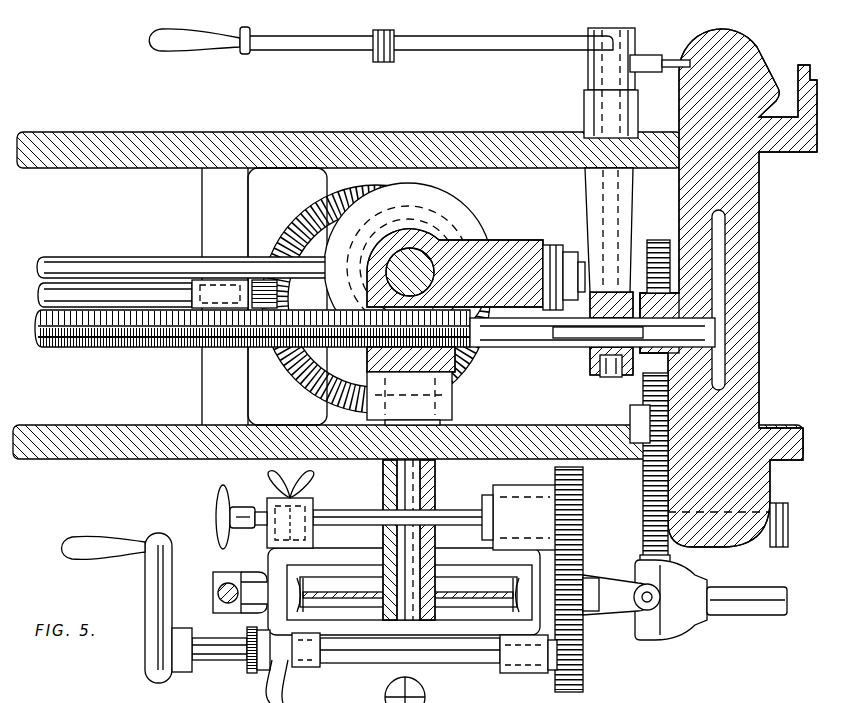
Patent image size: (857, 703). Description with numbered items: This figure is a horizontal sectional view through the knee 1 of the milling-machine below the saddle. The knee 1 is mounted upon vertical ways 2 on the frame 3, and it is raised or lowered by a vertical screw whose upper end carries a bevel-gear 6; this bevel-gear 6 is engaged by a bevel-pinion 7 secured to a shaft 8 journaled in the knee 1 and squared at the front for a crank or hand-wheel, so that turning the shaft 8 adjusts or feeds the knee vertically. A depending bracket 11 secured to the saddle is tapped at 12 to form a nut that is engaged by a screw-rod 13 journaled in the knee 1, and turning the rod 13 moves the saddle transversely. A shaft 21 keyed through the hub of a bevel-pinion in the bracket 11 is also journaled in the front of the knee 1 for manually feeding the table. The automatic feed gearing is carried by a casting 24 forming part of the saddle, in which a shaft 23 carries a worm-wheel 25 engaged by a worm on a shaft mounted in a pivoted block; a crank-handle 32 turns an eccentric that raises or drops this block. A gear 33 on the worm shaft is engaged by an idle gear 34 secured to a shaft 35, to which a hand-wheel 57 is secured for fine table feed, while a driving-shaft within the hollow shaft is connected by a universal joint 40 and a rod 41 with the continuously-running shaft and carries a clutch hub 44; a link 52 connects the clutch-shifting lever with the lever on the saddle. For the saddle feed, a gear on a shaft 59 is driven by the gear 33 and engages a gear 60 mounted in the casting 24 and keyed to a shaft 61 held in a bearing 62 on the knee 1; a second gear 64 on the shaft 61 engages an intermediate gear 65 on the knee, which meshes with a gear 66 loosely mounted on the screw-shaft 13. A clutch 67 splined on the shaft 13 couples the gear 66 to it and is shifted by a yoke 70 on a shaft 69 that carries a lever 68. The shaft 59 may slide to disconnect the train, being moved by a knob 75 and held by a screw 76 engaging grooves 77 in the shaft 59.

The knee 1 is at (316, 142).
The vertical ways 2 is at (738, 92).
The frame 3 is at (746, 326).
The bevel-gear 6 is at (290, 226).
The bevel-pinion 7 is at (277, 290).
The shaft 8 is at (108, 272).
The depending bracket 11 is at (504, 248).
The nut 12 is at (458, 350).
The screw-rod 13 is at (508, 347).
The shaft 21 is at (158, 268).
The shaft 23 is at (410, 494).
The casting 24 is at (270, 562).
The worm-wheel 25 is at (448, 585).
The crank-handle 32 is at (290, 690).
The gear 33 is at (590, 596).
The idle gear 34 is at (584, 665).
The shaft 35 is at (220, 661).
The universal joint 40 is at (636, 616).
The rod 41 is at (740, 606).
The hub 44 is at (607, 588).
The link 52 is at (213, 593).
The hand-wheel 57 is at (150, 590).
The shaft 59 is at (330, 513).
The gear 60 is at (584, 470).
The shaft 61 is at (610, 530).
The bearing 62 is at (742, 545).
The second gear 64 is at (670, 560).
The intermediate gear 65 is at (643, 487).
The gear 66 is at (655, 242).
The clutch 67 is at (580, 355).
The lever 68 is at (513, 49).
The shaft 69 is at (613, 30).
The yoke 70 is at (608, 378).
The knob 75 is at (218, 509).
The screw 76 is at (266, 486).
The grooves 77 is at (264, 508).